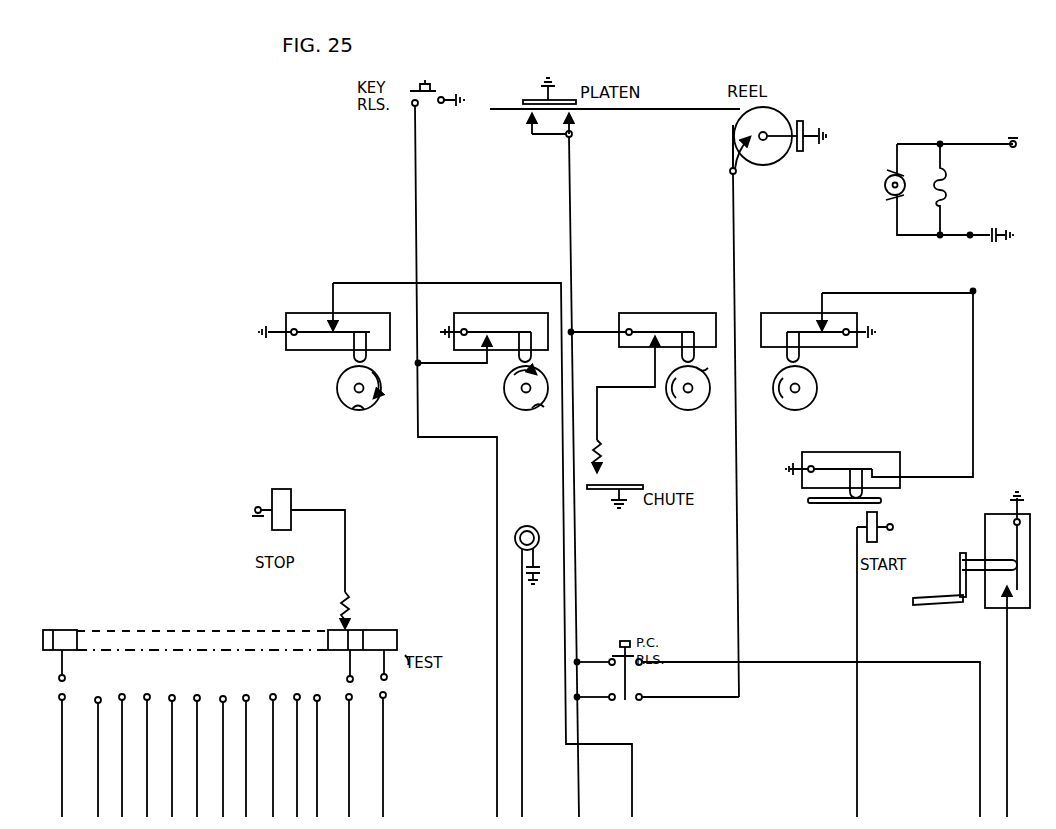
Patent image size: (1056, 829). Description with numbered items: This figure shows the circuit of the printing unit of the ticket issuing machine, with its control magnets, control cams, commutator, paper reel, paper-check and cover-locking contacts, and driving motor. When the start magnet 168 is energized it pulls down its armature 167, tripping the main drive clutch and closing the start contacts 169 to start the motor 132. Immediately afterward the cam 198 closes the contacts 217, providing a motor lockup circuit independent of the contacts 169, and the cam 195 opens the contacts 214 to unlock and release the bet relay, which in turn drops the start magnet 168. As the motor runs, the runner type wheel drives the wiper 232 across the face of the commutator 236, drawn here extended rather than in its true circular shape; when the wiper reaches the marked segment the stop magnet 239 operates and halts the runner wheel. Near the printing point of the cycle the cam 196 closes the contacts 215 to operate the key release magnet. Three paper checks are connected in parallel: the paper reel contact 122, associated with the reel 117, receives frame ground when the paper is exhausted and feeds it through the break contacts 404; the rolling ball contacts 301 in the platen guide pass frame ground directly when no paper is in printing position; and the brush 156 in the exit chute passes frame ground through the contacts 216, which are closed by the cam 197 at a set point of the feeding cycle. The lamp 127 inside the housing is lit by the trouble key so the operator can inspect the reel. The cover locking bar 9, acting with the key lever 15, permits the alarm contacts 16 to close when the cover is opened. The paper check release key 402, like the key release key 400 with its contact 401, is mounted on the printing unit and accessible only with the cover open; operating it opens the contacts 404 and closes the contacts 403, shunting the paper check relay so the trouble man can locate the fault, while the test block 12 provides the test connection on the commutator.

The key release key 400 is at (421, 80).
The key release contact 401 is at (438, 91).
The rolling ball contacts 301 is at (576, 118).
The reel 117 is at (772, 120).
The paper reel contact 122 is at (756, 159).
The motor 132 is at (889, 180).
The contacts 214 is at (310, 312).
The contacts 215 is at (500, 312).
The contacts 216 is at (662, 312).
The contacts 217 is at (794, 312).
The cam 195 is at (366, 410).
The cam 196 is at (508, 410).
The cam 197 is at (676, 411).
The cam 198 is at (784, 411).
The brush 156 is at (600, 458).
The start contacts 169 is at (890, 458).
The armature 167 is at (826, 505).
The start magnet 168 is at (886, 548).
The alarm contacts 16 is at (990, 532).
The key lever 15 is at (960, 565).
The cover locking bar 9 is at (947, 601).
The lamp 127 is at (548, 514).
The paper check release key 402 is at (625, 646).
The contacts 403 is at (638, 666).
The break contacts 404 is at (638, 701).
The stop magnet 239 is at (284, 497).
The wiper 232 is at (350, 620).
The commutator 236 is at (160, 634).
The test block 12 is at (362, 656).